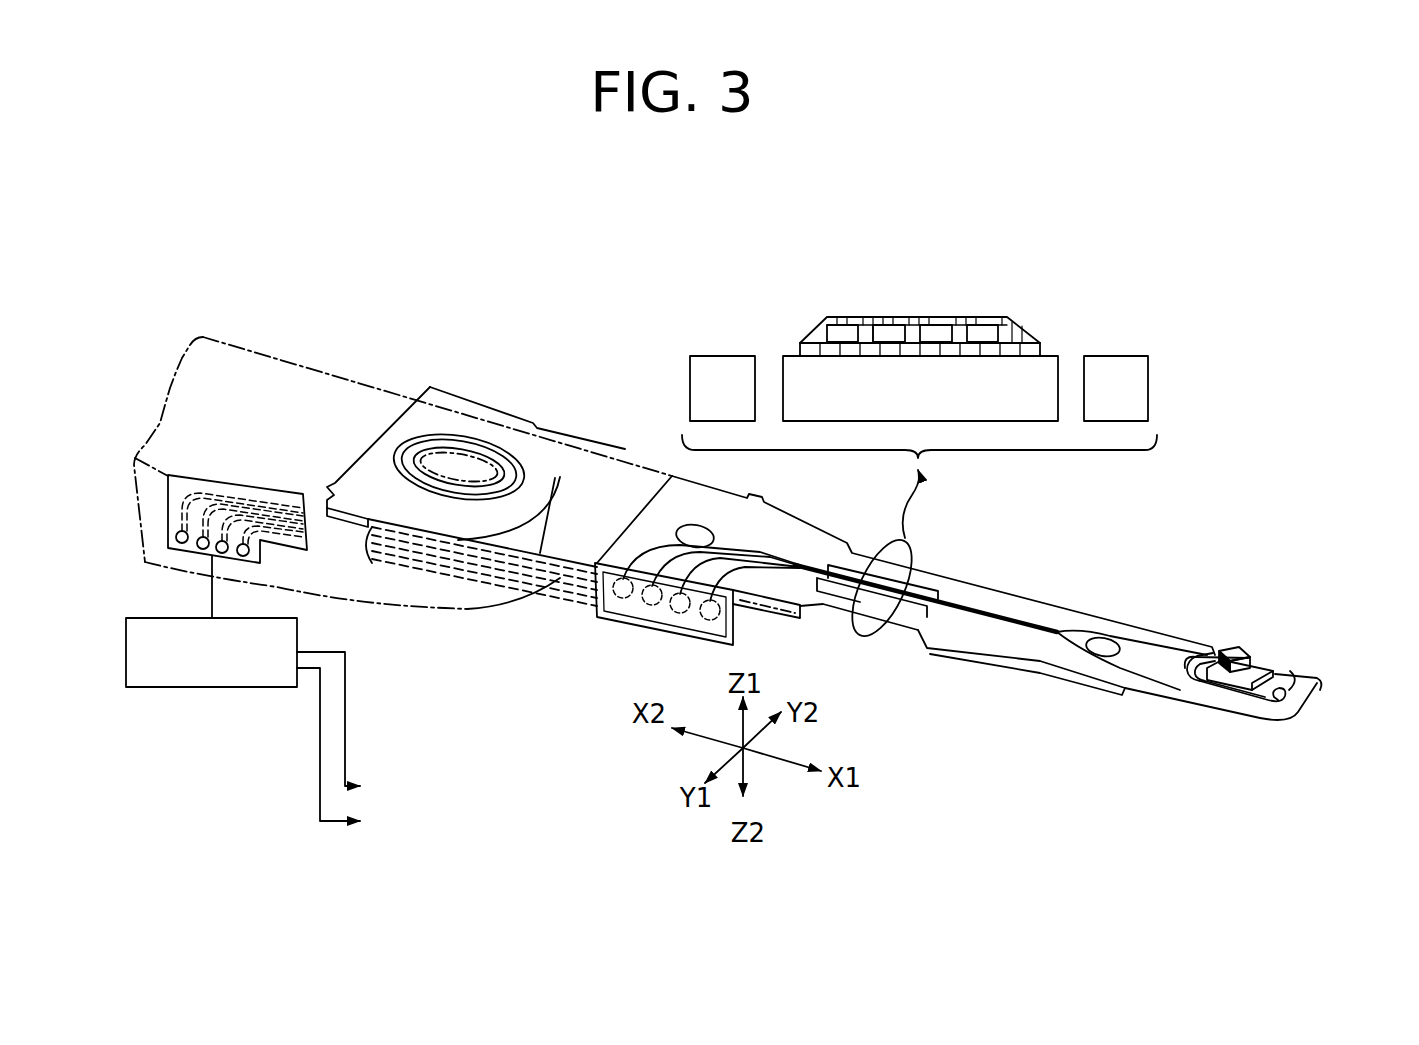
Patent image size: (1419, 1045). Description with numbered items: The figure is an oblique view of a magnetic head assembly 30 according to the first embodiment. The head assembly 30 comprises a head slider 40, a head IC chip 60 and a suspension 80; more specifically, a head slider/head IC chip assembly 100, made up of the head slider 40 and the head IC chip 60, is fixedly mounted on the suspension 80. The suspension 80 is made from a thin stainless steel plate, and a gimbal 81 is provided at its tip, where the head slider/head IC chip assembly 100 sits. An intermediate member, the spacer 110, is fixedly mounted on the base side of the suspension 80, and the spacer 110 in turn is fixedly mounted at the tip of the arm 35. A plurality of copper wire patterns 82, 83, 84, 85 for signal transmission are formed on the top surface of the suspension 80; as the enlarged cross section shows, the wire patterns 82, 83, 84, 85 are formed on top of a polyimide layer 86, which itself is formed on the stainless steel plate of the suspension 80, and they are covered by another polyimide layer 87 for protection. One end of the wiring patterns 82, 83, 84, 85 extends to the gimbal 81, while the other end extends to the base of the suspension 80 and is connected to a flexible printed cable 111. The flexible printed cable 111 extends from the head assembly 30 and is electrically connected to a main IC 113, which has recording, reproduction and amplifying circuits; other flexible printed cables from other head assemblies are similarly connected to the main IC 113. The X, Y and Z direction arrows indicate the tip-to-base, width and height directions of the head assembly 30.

The magnetic head assembly 30 is at (594, 239).
The arm 35 is at (277, 358).
The head slider 40 is at (1233, 651).
The head IC chip 60 is at (1285, 672).
The suspension 80 is at (999, 477).
The gimbal 81 is at (1205, 684).
The copper wire pattern 82 is at (937, 318).
The copper wire pattern 83 is at (987, 318).
The copper wire pattern 84 is at (895, 318).
The copper wire pattern 85 is at (842, 318).
The polyimide layer 86 is at (1037, 348).
The polyimide layer 87 is at (1008, 317).
The head slider/head IC chip assembly 100 is at (1299, 653).
The spacer 110 is at (599, 470).
The flexible printed cable 111 is at (458, 580).
The main IC 113 is at (215, 687).